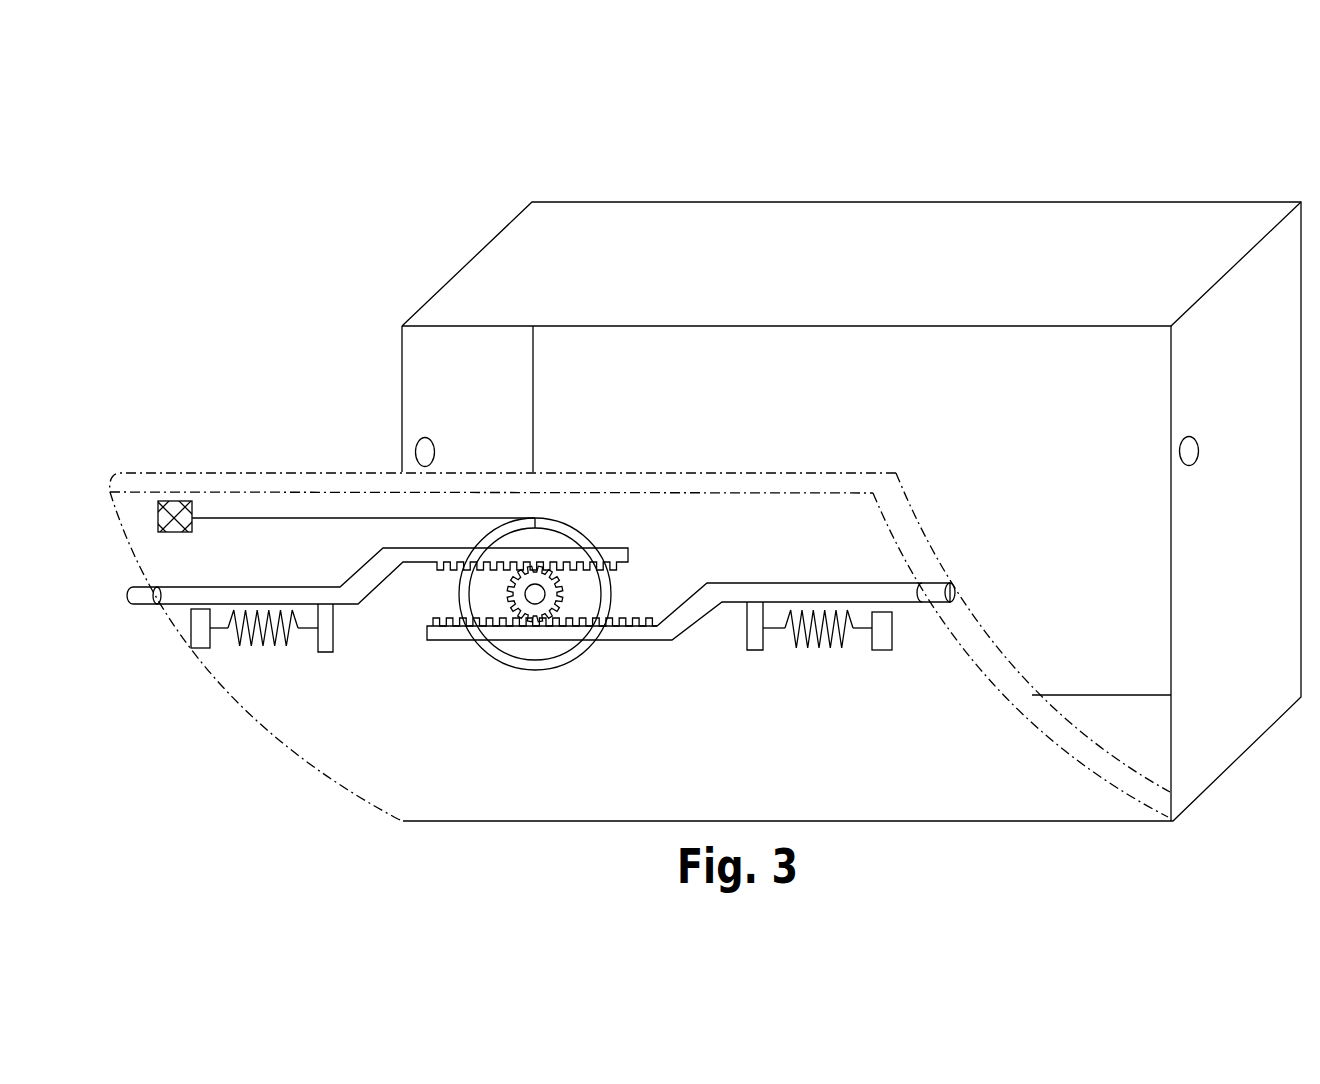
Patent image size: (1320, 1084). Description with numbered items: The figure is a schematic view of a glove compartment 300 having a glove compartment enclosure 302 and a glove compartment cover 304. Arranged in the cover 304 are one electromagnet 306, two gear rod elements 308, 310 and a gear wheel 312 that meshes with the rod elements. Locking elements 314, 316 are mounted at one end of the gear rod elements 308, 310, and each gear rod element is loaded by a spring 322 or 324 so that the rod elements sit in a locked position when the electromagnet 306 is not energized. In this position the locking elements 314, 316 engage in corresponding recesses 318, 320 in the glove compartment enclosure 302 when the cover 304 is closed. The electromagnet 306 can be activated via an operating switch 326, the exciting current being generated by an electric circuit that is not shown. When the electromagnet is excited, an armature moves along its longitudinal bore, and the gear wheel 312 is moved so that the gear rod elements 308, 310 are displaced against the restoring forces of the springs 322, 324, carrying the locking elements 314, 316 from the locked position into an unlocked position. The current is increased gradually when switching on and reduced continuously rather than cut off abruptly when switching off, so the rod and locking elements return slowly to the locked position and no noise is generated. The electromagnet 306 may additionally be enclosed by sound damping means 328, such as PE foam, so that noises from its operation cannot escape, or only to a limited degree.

The glove compartment 300 is at (262, 352).
The glove compartment enclosure 302 is at (720, 210).
The glove compartment cover 304 is at (300, 755).
The electromagnet 306 is at (548, 535).
The gear rod element 308 is at (274, 587).
The gear rod element 310 is at (807, 583).
The gear wheel 312 is at (510, 590).
The locking element 314 is at (140, 604).
The locking element 316 is at (956, 592).
The recess 318 is at (417, 453).
The recess 320 is at (1199, 452).
The spring 322 is at (275, 645).
The spring 324 is at (817, 648).
The operating switch 326 is at (158, 518).
The sound damping means 328 is at (612, 591).